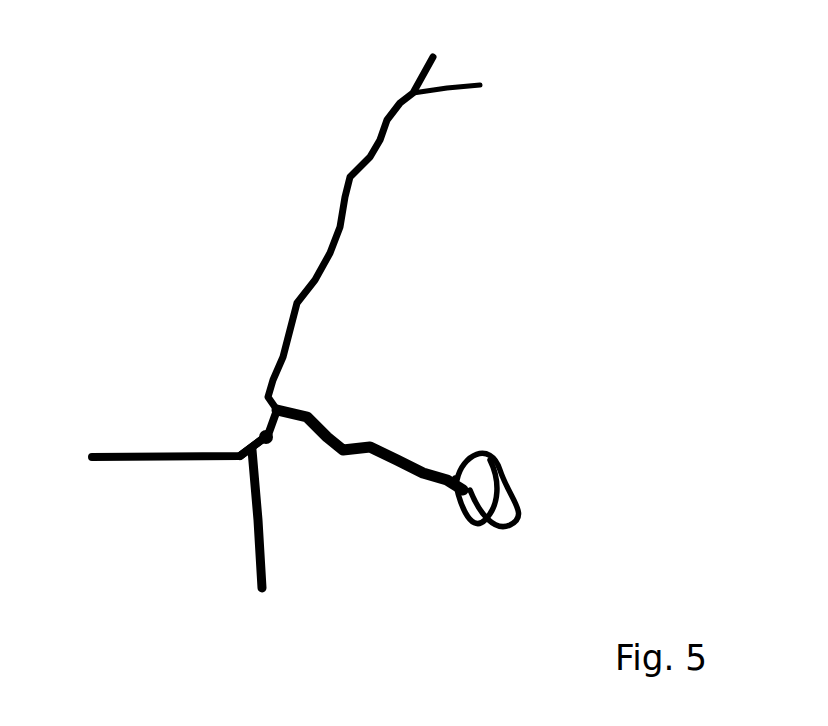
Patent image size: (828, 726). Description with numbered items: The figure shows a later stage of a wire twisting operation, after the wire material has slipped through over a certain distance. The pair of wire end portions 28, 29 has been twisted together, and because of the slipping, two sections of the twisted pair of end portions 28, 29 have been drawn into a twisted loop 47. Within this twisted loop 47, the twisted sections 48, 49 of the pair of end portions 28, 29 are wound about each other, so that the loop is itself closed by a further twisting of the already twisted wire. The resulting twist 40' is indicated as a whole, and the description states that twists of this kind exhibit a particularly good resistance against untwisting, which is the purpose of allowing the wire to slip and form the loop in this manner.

The twist 40' is at (163, 368).
The end portion 28 is at (130, 452).
The end portion 29 is at (262, 567).
The twisted loop 47 is at (420, 458).
The twisted section 48 is at (262, 445).
The twisted section 49 is at (337, 252).